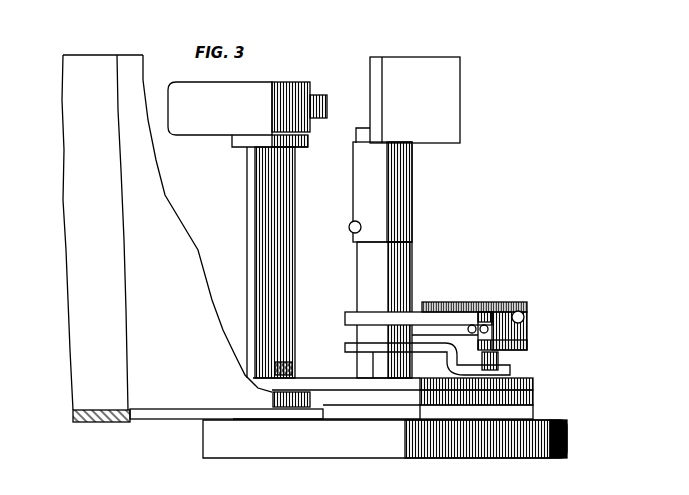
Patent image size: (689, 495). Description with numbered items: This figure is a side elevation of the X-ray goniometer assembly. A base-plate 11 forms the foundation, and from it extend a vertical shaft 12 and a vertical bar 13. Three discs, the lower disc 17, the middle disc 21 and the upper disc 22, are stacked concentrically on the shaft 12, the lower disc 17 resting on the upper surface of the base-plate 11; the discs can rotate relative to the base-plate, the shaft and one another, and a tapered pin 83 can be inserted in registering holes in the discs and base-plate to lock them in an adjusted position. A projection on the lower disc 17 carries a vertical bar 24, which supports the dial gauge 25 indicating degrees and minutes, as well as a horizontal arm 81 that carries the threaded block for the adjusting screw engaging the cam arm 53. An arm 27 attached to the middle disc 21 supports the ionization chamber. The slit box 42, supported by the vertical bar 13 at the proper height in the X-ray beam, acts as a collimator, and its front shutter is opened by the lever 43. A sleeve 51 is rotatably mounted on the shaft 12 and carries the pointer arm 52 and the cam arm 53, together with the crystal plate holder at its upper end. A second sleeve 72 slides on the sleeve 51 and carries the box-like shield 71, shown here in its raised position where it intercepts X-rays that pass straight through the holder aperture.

The base-plate 11 is at (533, 456).
The vertical shaft 12 is at (373, 366).
The vertical bar 13 is at (247, 278).
The lower disc 17 is at (535, 412).
The middle disc 21 is at (533, 395).
The upper disc 22 is at (533, 379).
The vertical bar 24 is at (505, 369).
The dial gauge 25 is at (500, 302).
The arm 27 is at (163, 416).
The slit box 42 is at (200, 130).
The lever 43 is at (337, 88).
The sleeve 51 is at (412, 271).
The pointer arm 52 is at (345, 347).
The cam arm 53 is at (345, 318).
The box-like shield 71 is at (458, 99).
The sleeve 72 is at (412, 193).
The horizontal arm 81 is at (520, 346).
The tapered pin 83 is at (292, 369).